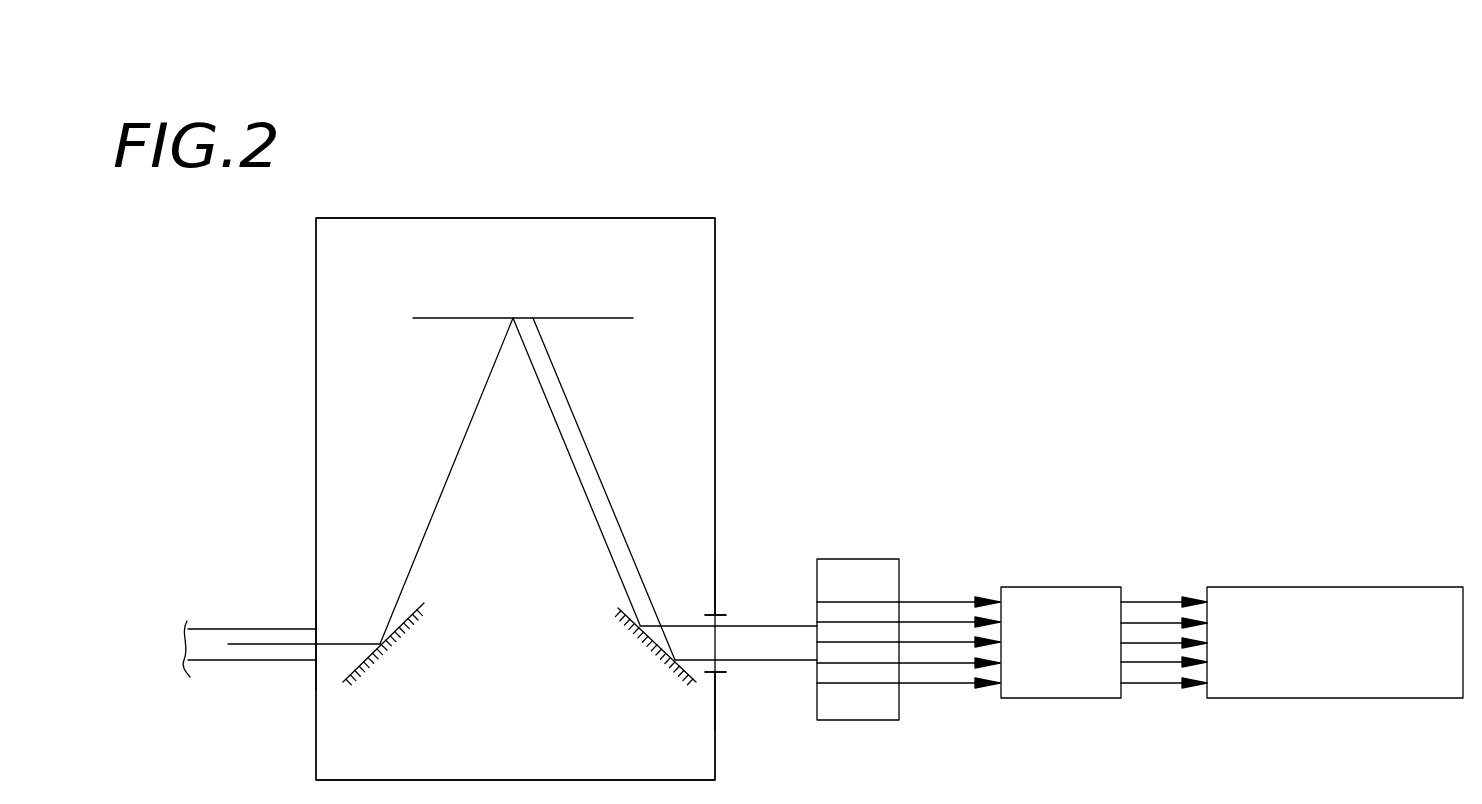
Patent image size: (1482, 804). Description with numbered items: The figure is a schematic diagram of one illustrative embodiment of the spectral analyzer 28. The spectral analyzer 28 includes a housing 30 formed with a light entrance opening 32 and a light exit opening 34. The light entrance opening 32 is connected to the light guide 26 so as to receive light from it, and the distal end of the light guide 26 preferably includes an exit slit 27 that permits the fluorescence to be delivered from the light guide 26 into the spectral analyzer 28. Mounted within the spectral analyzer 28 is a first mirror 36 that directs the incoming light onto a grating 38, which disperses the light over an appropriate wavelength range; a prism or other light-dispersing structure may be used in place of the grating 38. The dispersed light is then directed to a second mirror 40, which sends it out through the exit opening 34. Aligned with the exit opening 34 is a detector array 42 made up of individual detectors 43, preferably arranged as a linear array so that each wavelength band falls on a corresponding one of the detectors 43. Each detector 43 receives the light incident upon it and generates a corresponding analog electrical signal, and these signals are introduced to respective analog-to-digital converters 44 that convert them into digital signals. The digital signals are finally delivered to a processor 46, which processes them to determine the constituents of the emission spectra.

The light guide 26 is at (228, 629).
The exit slit 27 is at (315, 646).
The spectral analyzer 28 is at (737, 135).
The housing 30 is at (413, 218).
The light entrance opening 32 is at (316, 629).
The light exit opening 34 is at (722, 615).
The first mirror 36 is at (422, 598).
The grating 38 is at (585, 318).
The second mirror 40 is at (616, 603).
The detector array 42 is at (892, 475).
The detectors 43 is at (830, 643).
The analog-to-digital converters 44 is at (1101, 475).
The processor 46 is at (1375, 587).